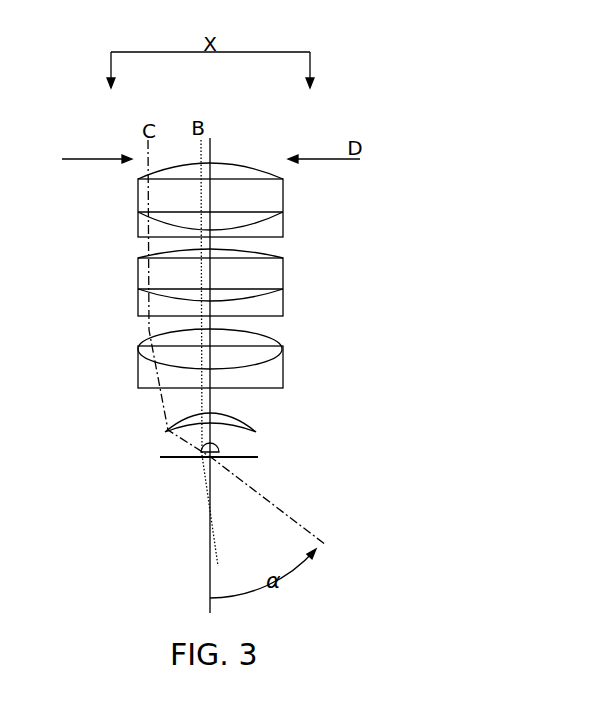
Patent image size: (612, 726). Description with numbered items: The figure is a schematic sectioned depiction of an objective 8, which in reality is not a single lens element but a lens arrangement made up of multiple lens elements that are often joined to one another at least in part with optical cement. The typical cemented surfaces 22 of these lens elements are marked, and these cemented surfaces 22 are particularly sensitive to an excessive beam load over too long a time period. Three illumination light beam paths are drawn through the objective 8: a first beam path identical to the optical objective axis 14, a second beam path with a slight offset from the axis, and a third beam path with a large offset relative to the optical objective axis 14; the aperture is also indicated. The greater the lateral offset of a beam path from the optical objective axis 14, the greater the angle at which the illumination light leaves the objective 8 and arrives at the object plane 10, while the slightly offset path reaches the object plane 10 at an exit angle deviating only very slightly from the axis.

The objective 8 is at (101, 289).
The object plane 10 is at (255, 456).
The optical objective axis 14 is at (237, 364).
The cemented surfaces 22 is at (283, 185).